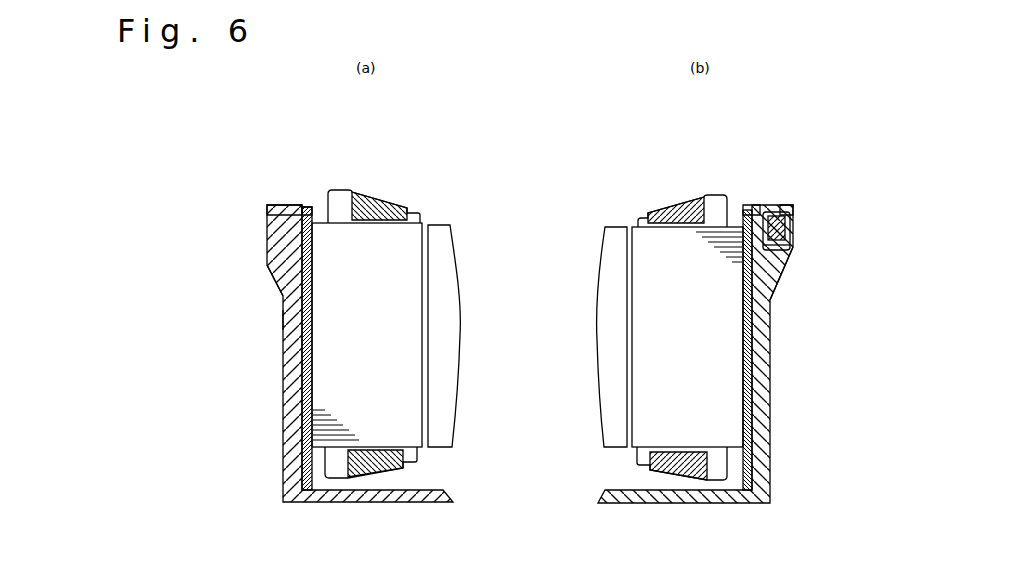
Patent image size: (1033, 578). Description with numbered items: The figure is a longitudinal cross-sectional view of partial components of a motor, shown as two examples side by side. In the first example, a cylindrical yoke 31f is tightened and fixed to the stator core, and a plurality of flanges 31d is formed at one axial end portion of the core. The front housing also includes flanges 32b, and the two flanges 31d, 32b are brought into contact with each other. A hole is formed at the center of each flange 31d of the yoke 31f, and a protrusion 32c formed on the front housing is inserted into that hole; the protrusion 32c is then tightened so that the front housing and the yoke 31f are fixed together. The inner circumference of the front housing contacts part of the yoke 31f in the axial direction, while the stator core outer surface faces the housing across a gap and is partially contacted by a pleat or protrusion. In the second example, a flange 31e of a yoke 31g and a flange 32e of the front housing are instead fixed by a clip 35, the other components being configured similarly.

The flange 31d is at (283, 209).
The flange 31e is at (752, 205).
The yoke 31f is at (286, 320).
The yoke 31g is at (772, 315).
The flange 32b is at (272, 265).
The protrusion 32c is at (303, 208).
The flange 32e is at (793, 206).
The clip 35 is at (792, 246).